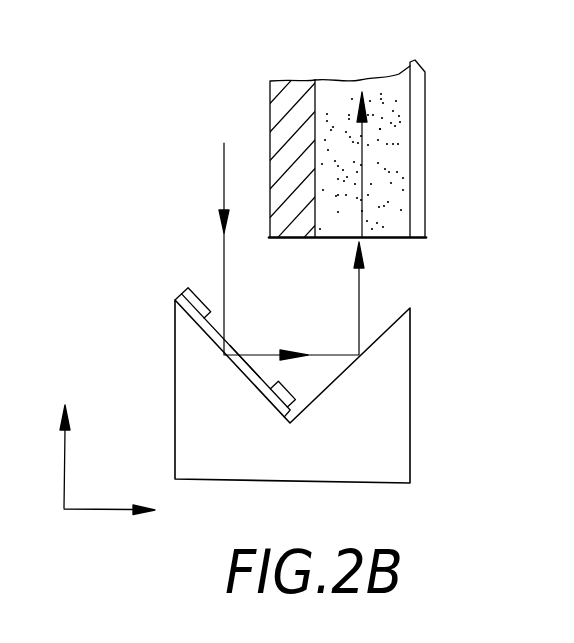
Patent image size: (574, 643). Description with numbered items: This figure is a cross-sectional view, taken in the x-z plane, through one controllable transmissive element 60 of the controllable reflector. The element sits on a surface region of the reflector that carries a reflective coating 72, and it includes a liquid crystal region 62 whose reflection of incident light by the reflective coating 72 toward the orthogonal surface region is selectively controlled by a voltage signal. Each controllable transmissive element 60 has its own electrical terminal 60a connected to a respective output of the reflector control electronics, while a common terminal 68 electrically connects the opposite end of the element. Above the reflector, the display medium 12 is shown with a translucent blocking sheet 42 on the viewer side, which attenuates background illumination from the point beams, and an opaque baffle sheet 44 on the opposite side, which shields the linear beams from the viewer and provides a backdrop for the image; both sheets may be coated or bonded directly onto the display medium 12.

The display medium 12 is at (387, 86).
The opaque baffle sheet 44 is at (270, 126).
The translucent blocking sheet 42 is at (425, 134).
The controllable transmissive element 60 is at (171, 284).
The electrical terminal 60a is at (198, 299).
The liquid crystal region 62 is at (253, 370).
The common terminal 68 is at (296, 398).
The reflective coating 72 is at (392, 326).